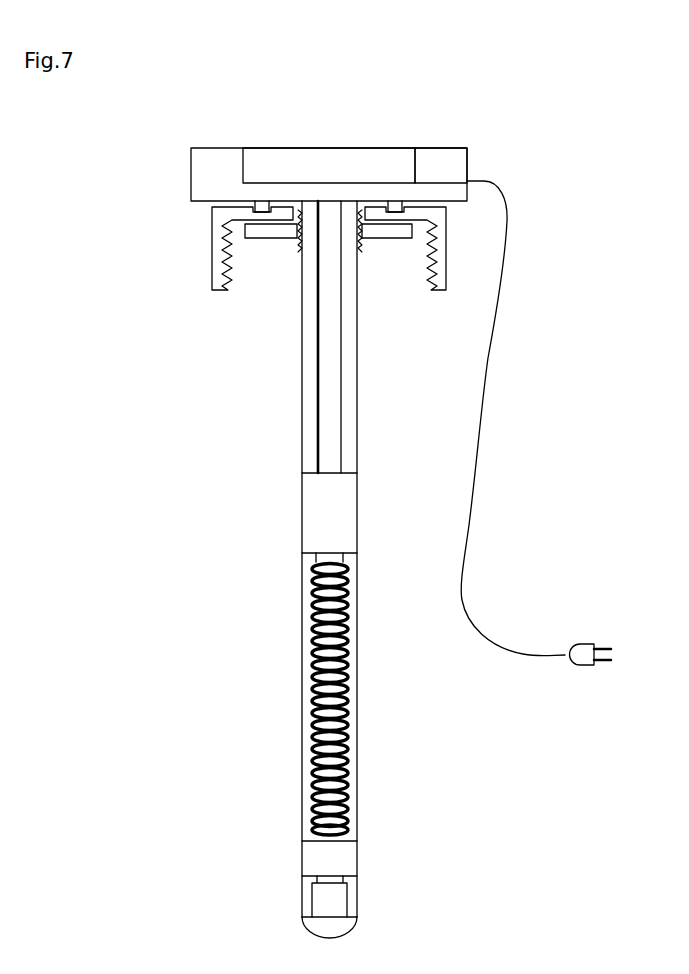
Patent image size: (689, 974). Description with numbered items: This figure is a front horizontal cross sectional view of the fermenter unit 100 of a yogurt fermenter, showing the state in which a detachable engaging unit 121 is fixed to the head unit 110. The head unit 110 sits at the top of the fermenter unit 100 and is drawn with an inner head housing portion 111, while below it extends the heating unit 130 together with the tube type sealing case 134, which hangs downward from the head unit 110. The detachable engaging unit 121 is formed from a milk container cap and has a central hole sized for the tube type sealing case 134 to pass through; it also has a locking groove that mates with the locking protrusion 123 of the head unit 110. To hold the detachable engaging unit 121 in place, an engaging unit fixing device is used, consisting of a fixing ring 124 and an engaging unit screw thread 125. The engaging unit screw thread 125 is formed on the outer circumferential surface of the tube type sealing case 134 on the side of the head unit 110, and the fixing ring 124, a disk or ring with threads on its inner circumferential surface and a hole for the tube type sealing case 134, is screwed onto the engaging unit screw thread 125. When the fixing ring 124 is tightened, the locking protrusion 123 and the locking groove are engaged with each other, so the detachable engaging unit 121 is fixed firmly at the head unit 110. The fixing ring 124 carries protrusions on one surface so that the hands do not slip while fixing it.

The fermenter unit 100 is at (205, 178).
The head unit 110 is at (433, 163).
The head housing 111 is at (315, 160).
The detachable engaging unit 121 is at (220, 250).
The locking protrusion 123 is at (396, 207).
The fixing ring 124 is at (267, 232).
The engaging unit screw thread 125 is at (361, 245).
The heating unit 130 is at (309, 401).
The tube type sealing case 134 is at (298, 638).